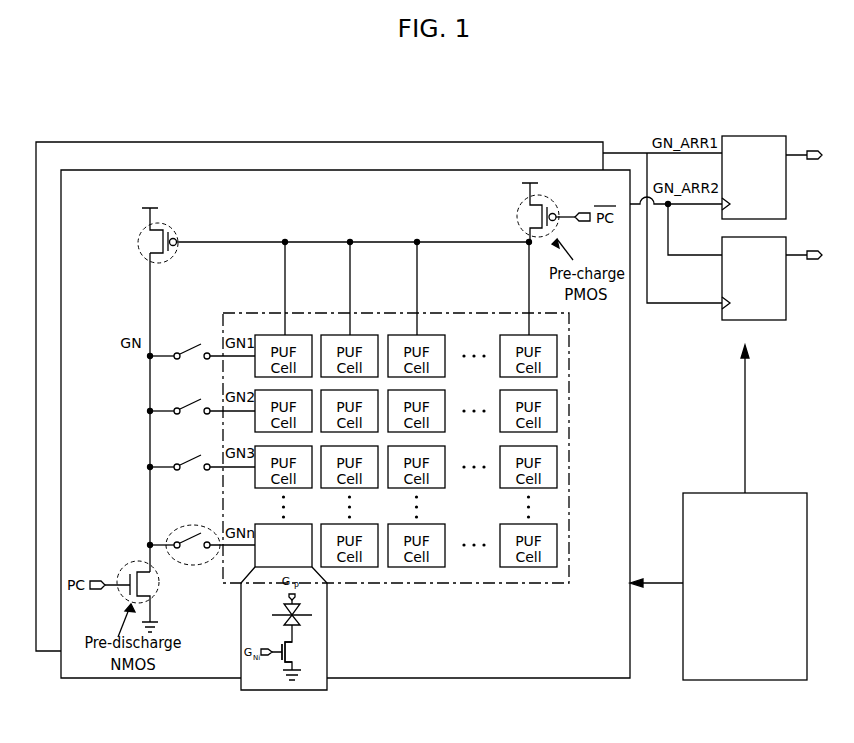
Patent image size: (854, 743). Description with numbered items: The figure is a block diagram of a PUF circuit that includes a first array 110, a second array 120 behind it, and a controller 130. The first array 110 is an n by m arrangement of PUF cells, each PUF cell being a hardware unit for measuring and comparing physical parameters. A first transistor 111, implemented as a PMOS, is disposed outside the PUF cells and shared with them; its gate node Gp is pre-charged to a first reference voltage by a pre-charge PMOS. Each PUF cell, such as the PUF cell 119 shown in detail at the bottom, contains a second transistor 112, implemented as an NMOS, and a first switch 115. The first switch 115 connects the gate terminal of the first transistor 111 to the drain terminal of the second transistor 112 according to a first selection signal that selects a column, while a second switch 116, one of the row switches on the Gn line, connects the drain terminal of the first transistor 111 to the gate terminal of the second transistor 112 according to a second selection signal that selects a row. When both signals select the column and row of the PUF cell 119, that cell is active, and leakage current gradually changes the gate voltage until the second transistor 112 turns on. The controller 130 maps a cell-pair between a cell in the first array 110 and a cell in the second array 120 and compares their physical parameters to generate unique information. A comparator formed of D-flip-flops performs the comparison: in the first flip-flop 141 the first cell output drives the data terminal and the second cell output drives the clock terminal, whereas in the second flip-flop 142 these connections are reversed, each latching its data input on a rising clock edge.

The first array 110 is at (558, 170).
The first transistor 111 is at (157, 229).
The second transistor 112 is at (290, 648).
The first switch 115 is at (300, 607).
The second switch 116 is at (168, 528).
The PUF cell 119 is at (300, 524).
The second array 120 is at (445, 142).
The controller 130 is at (718, 512).
The first flip-flop 141 is at (772, 177).
The second flip-flop 142 is at (772, 278).